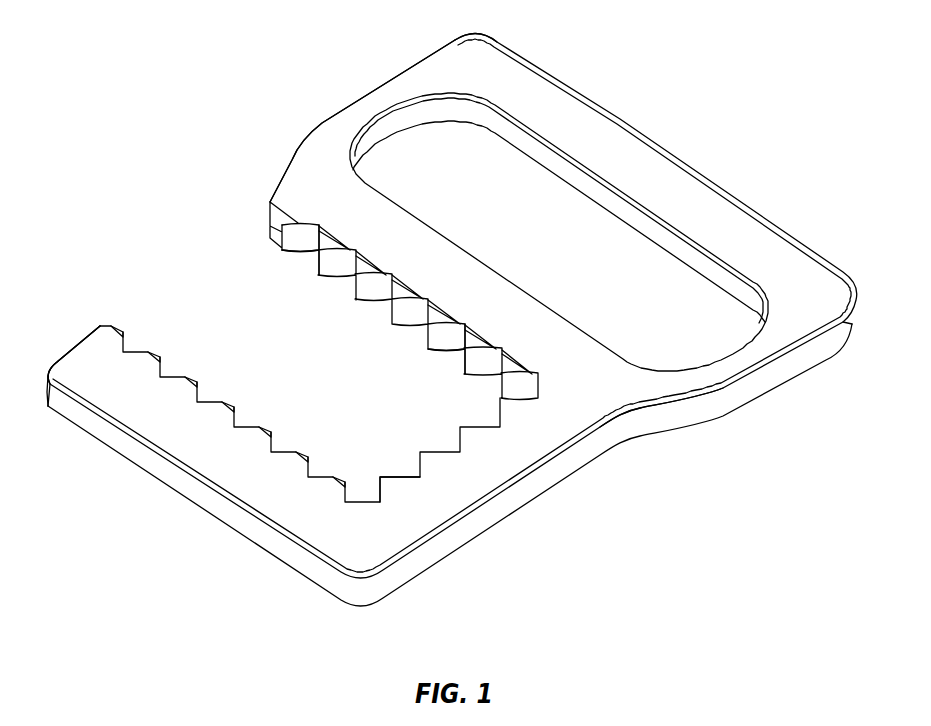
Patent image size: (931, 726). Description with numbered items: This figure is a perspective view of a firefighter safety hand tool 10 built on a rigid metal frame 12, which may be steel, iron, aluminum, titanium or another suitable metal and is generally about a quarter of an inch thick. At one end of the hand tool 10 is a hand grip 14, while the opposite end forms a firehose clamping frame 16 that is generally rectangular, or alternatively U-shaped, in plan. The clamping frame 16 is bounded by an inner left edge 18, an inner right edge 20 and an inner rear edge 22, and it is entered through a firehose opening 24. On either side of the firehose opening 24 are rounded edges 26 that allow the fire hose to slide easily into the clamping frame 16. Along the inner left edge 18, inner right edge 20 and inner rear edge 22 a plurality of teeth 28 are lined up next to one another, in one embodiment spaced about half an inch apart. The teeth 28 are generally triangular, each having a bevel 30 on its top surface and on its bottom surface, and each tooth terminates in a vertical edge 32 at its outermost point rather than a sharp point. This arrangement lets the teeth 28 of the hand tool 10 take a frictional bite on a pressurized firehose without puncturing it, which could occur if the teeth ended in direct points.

The firefighter safety hand tool 10 is at (638, 467).
The metal frame 12 is at (593, 412).
The hand grip 14 is at (637, 150).
The firehose clamping frame 16 is at (383, 417).
The inner left edge 18 is at (185, 390).
The inner right edge 20 is at (353, 217).
The inner rear edge 22 is at (447, 510).
The firehose opening 24 is at (173, 285).
The rounded edges 26 is at (290, 163).
The teeth 28 is at (403, 313).
The bevel 30 is at (313, 250).
The vertical edge 32 is at (350, 285).